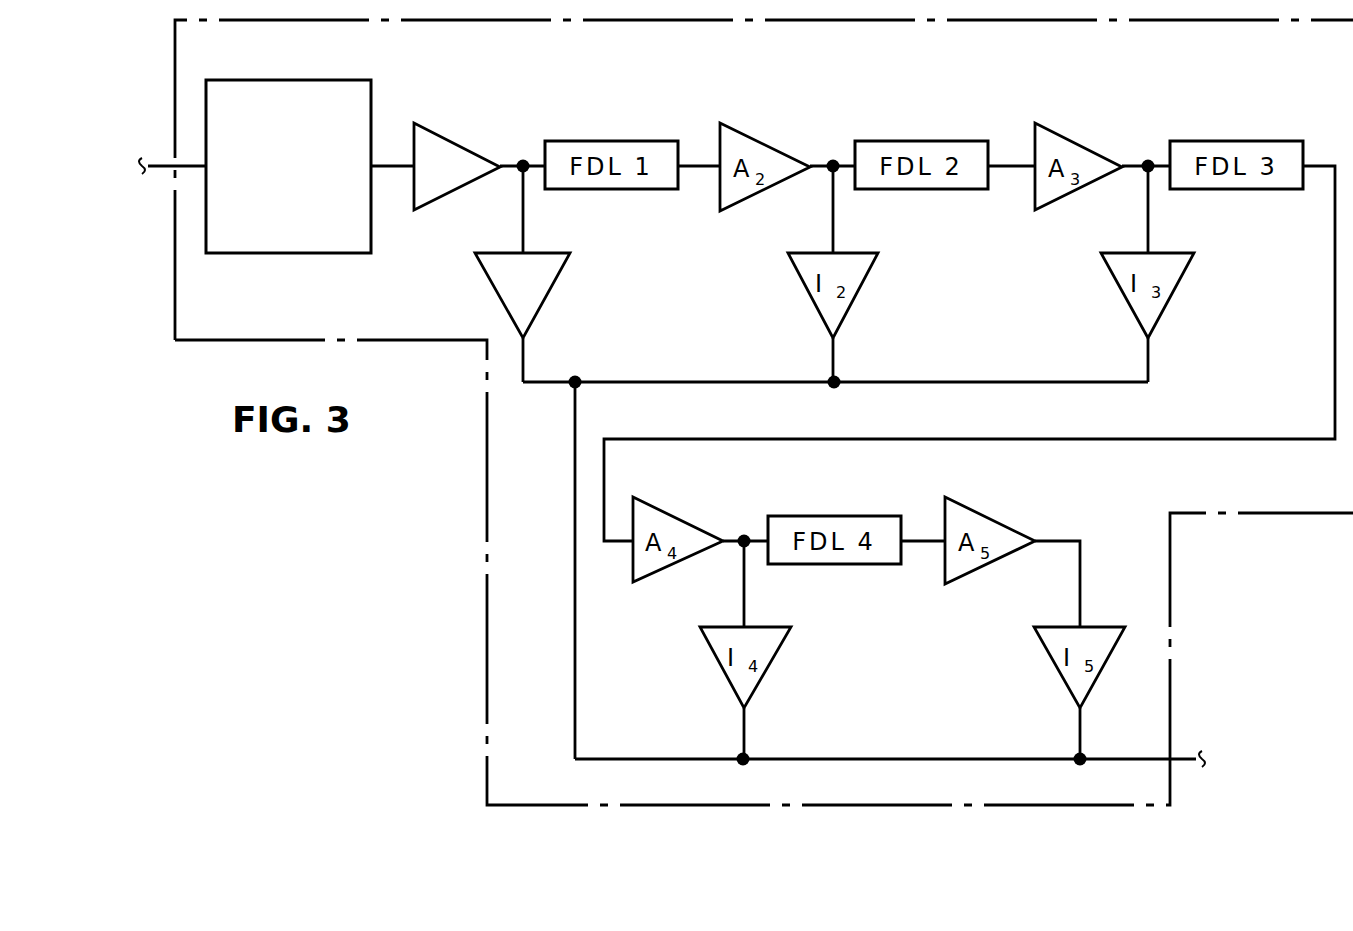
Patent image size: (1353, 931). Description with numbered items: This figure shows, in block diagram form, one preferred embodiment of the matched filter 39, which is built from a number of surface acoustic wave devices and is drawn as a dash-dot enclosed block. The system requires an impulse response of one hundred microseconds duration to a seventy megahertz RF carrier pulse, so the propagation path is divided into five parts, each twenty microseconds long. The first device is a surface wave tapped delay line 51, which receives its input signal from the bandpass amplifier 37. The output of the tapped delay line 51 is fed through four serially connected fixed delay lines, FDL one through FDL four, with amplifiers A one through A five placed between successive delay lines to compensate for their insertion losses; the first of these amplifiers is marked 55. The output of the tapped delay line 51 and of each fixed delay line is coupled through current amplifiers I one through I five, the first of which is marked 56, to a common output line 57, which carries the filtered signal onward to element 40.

The matched filter 39 is at (470, 522).
The bandpass amplifier 37 is at (125, 167).
The surface wave tapped delay line 51 is at (351, 80).
The amplifier A1 55 is at (442, 138).
The inverter I1 56 is at (556, 284).
The output line 57 is at (1005, 758).
The output to stage 40 is at (1248, 761).